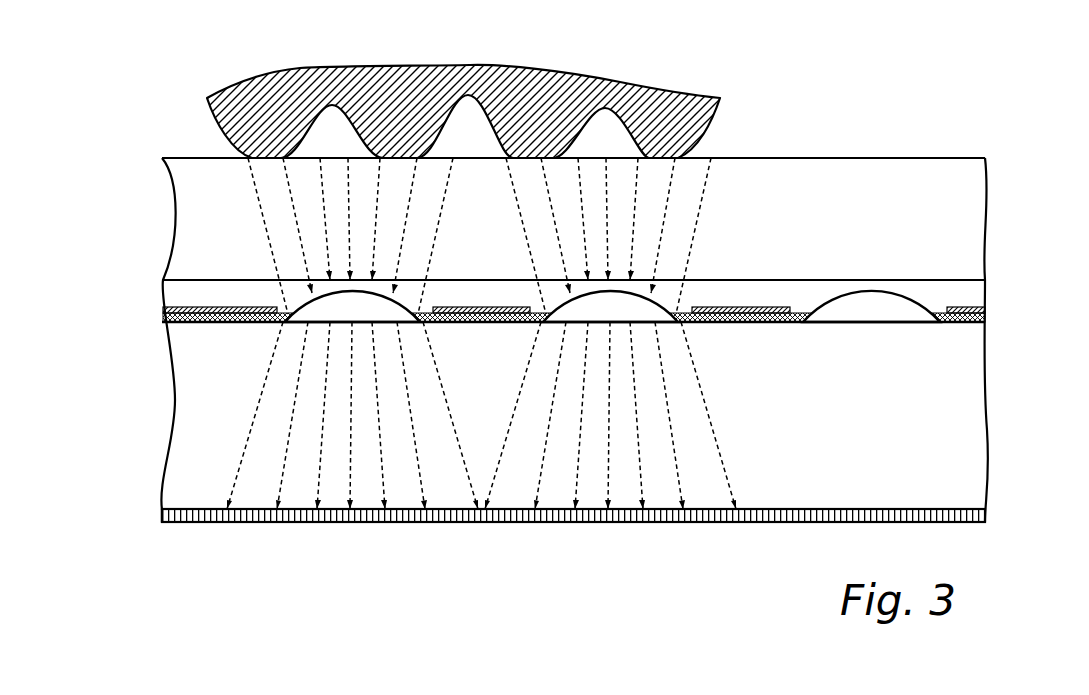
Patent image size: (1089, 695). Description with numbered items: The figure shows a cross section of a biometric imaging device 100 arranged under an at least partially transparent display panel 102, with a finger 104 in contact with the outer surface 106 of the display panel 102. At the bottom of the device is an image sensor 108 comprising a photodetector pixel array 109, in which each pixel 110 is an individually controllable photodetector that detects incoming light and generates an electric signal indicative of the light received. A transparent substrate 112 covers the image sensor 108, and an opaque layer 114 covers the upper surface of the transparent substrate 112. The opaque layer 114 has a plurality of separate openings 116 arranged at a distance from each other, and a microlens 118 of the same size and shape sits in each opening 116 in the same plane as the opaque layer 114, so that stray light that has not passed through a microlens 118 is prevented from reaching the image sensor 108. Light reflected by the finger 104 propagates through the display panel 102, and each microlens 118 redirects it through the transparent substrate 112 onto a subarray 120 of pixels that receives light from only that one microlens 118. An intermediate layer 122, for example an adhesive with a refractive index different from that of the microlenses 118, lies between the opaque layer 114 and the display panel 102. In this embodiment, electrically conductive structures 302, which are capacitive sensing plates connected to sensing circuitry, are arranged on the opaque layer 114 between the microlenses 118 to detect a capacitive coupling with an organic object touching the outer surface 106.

The biometric imaging device 100 is at (138, 272).
The display panel 102 is at (193, 210).
The finger 104 is at (533, 93).
The outer surface 106 is at (767, 157).
The image sensor 108 is at (158, 515).
The photodetector pixel array 109 is at (202, 509).
The pixel 110 is at (215, 523).
The transparent substrate 112 is at (943, 423).
The opaque layer 114 is at (203, 323).
The opening 116 is at (892, 323).
The microlens 118 is at (657, 310).
The subarray of pixels 120 is at (740, 532).
The intermediate layer 122 is at (183, 288).
The electrically conductive structure 302 is at (467, 307).